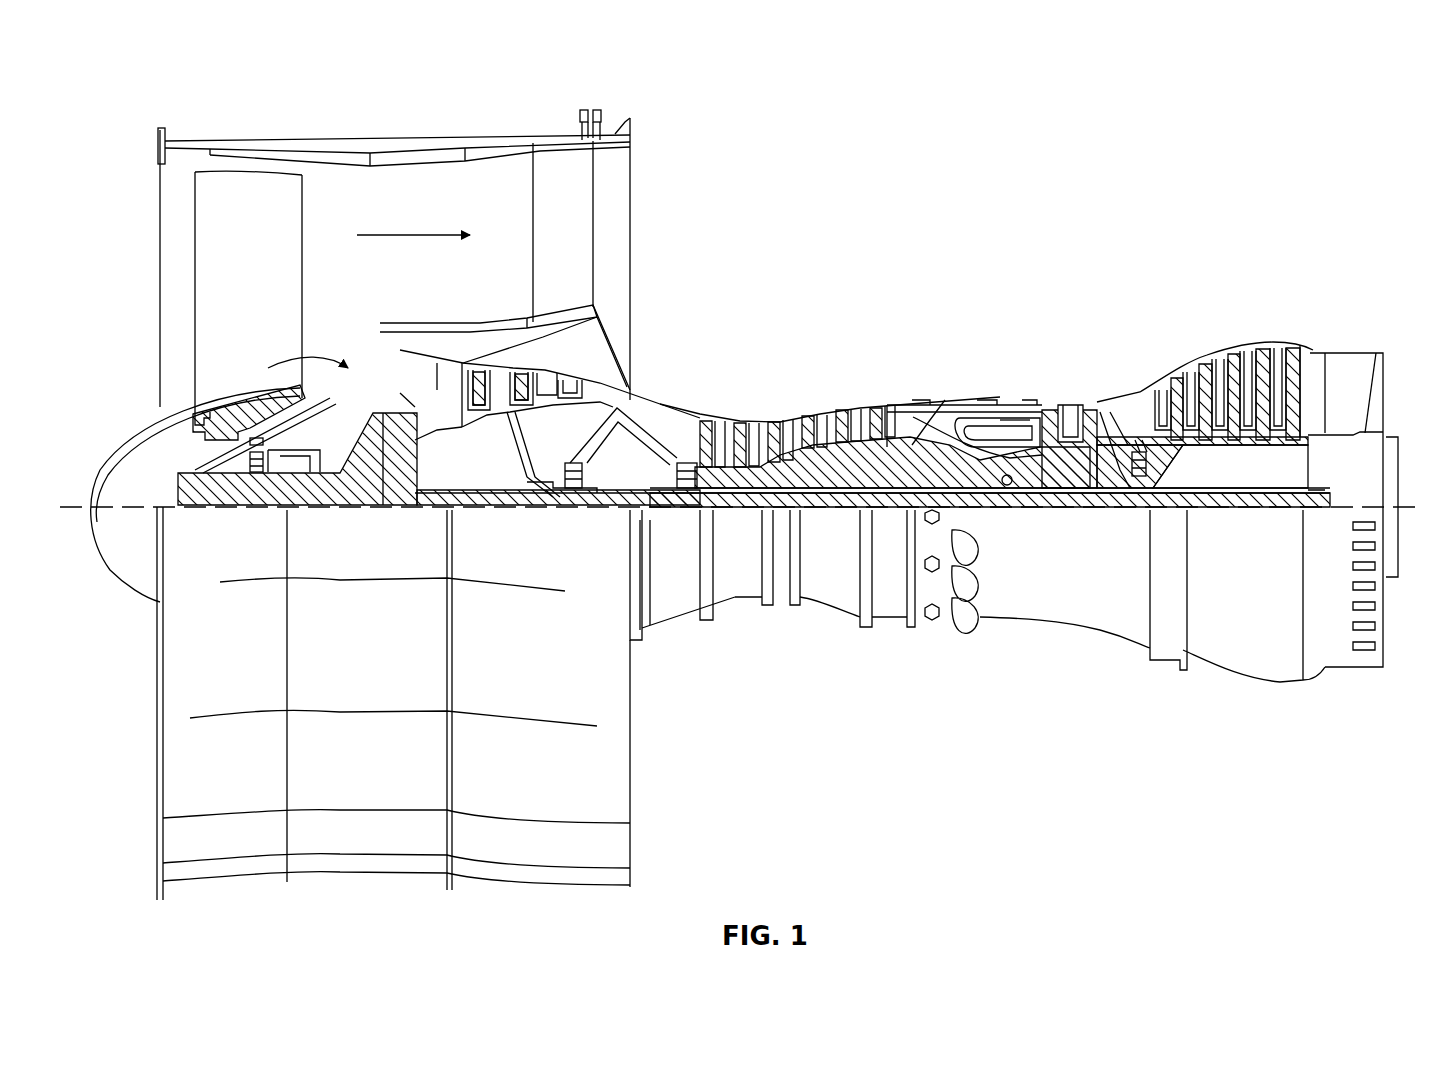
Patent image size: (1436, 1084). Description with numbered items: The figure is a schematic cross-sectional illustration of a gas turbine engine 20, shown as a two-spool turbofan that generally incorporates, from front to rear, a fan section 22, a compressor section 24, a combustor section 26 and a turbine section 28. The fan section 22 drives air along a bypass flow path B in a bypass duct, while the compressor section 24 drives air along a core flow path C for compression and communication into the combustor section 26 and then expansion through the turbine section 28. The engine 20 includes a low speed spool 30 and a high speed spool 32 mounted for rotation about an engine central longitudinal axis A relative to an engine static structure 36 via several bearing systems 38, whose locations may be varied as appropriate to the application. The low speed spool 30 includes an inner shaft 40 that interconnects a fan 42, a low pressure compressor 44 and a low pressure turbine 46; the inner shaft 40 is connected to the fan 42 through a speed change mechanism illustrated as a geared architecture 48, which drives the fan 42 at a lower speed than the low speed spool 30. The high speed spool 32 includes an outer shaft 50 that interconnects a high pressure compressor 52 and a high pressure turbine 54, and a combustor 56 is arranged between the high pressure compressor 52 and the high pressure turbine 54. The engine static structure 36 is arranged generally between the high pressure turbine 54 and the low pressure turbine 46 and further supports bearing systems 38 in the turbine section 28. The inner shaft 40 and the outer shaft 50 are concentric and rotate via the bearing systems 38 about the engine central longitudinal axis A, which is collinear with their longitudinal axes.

The gas turbine engine 20 is at (1203, 177).
The fan section 22 is at (263, 130).
The compressor section 24 is at (820, 365).
The combustor section 26 is at (988, 365).
The turbine section 28 is at (1135, 345).
The low speed spool 30 is at (852, 515).
The high speed spool 32 is at (930, 418).
The engine static structure 36 is at (892, 628).
The bearing systems 38 is at (258, 475).
The inner shaft 40 is at (648, 512).
The fan 42 is at (282, 268).
The low pressure compressor 44 is at (540, 372).
The low pressure turbine 46 is at (1242, 370).
The geared architecture 48 is at (400, 478).
The outer shaft 50 is at (1012, 488).
The high pressure compressor 52 is at (800, 470).
The high pressure turbine 54 is at (1070, 405).
The combustor 56 is at (1000, 422).
The engine central longitudinal axis A is at (1403, 505).
The bypass flow path B is at (418, 234).
The core flow path C is at (280, 364).